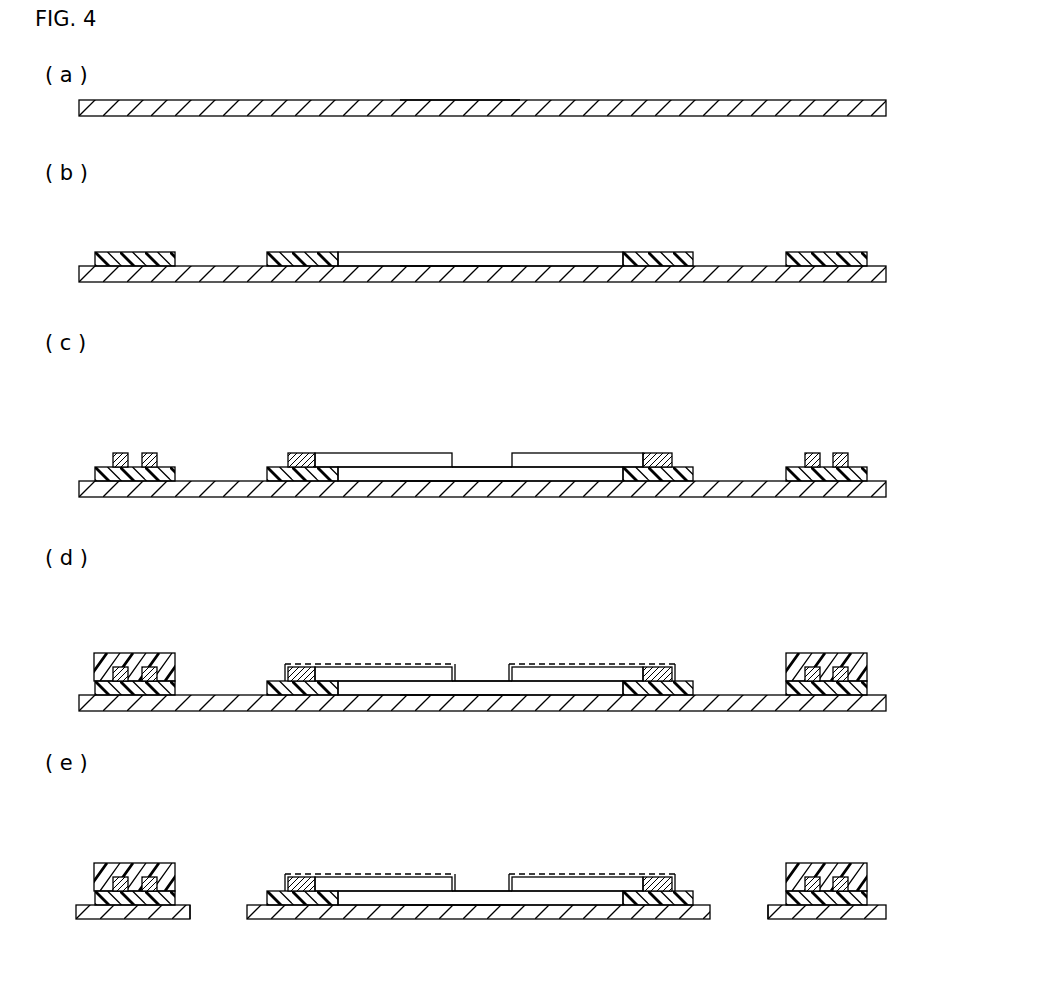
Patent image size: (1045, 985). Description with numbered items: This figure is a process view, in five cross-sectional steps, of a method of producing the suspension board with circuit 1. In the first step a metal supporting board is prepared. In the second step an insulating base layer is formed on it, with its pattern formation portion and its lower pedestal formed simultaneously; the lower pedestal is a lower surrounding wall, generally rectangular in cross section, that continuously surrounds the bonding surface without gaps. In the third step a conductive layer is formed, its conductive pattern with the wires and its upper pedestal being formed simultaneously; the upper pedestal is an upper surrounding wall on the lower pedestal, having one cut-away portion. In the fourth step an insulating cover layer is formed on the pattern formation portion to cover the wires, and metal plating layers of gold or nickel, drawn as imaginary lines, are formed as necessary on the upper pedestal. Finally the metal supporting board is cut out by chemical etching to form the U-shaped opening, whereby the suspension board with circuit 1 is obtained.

The suspension board with circuit 1 is at (488, 973).